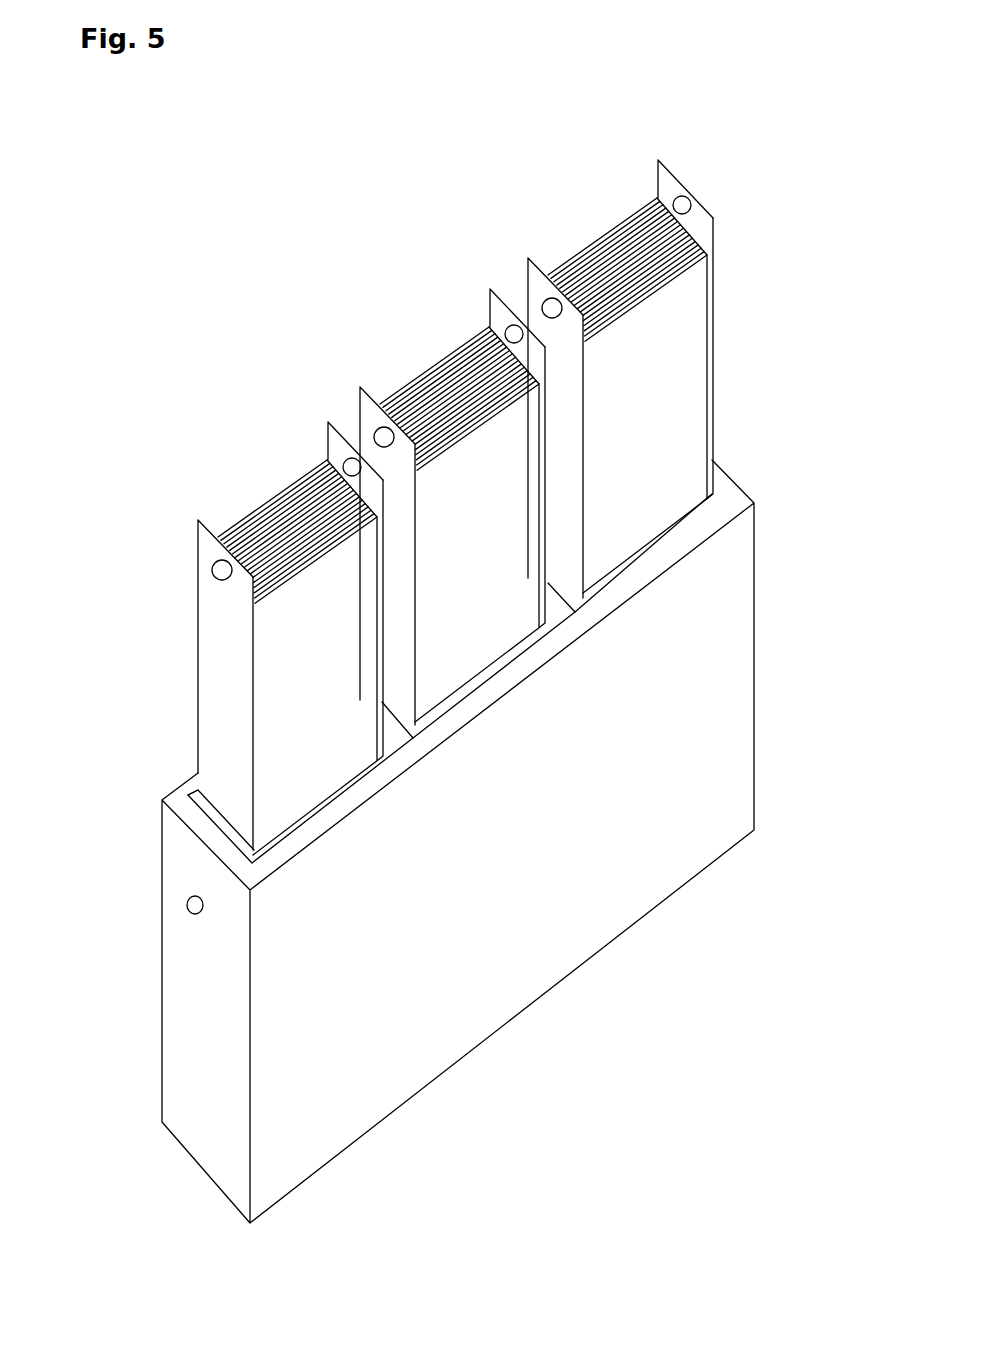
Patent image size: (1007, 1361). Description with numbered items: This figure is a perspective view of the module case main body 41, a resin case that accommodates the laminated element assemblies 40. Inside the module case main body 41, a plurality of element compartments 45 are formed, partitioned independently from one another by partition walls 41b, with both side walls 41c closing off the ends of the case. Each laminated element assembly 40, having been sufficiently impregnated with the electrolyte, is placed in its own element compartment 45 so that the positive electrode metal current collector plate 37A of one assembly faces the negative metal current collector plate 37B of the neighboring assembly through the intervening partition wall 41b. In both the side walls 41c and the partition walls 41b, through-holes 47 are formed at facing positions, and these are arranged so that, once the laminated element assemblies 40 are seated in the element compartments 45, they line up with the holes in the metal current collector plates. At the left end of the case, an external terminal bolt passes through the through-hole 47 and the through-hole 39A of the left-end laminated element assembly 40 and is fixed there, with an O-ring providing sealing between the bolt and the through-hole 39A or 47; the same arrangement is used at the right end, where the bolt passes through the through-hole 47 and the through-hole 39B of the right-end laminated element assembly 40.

The positive electrode metal current collector plate 37A is at (203, 545).
The negative metal current collector plate 37B is at (333, 447).
The through-hole 39A is at (213, 564).
The through-hole 39B is at (672, 198).
The laminated element assembly 40 is at (414, 354).
The module case main body 41 is at (733, 660).
The partition wall 41b is at (397, 740).
The side wall 41c is at (718, 480).
The element compartment 45 is at (208, 833).
The through-hole 47 is at (186, 908).